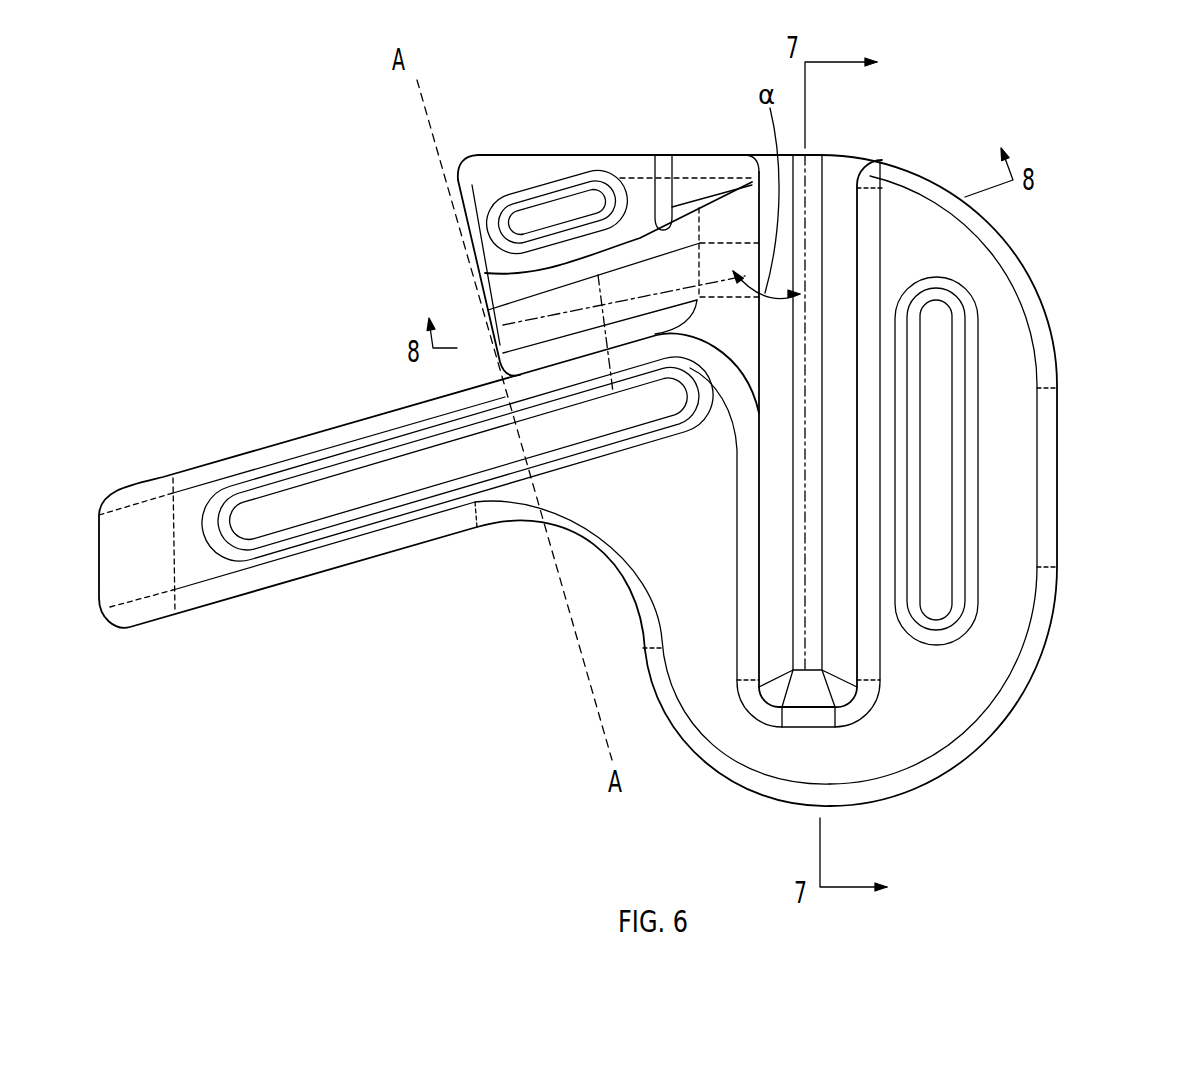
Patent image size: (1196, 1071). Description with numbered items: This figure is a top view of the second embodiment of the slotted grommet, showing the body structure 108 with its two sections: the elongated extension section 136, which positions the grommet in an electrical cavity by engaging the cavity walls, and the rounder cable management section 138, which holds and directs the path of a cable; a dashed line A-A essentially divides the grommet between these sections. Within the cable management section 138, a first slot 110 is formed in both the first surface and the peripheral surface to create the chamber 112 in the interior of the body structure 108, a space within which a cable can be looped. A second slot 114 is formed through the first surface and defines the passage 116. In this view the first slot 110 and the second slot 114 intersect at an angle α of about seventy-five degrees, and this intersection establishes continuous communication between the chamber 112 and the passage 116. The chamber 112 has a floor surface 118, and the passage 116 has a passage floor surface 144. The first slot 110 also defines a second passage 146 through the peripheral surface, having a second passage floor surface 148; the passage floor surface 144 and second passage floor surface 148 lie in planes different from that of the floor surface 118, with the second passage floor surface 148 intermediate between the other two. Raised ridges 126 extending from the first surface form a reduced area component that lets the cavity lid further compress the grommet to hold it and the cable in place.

The body structure 108 is at (963, 763).
The first slot 110 is at (870, 478).
The chamber 112 is at (863, 415).
The second slot 114 is at (605, 357).
The passage 116 is at (500, 308).
The floor surface 118 is at (813, 523).
The raised ridges 126 is at (307, 503).
The extension section 136 is at (157, 477).
The cable management section 138 is at (1052, 325).
The passage floor surface 144 is at (638, 278).
The second passage 146 is at (818, 158).
The second passage floor surface 148 is at (815, 190).